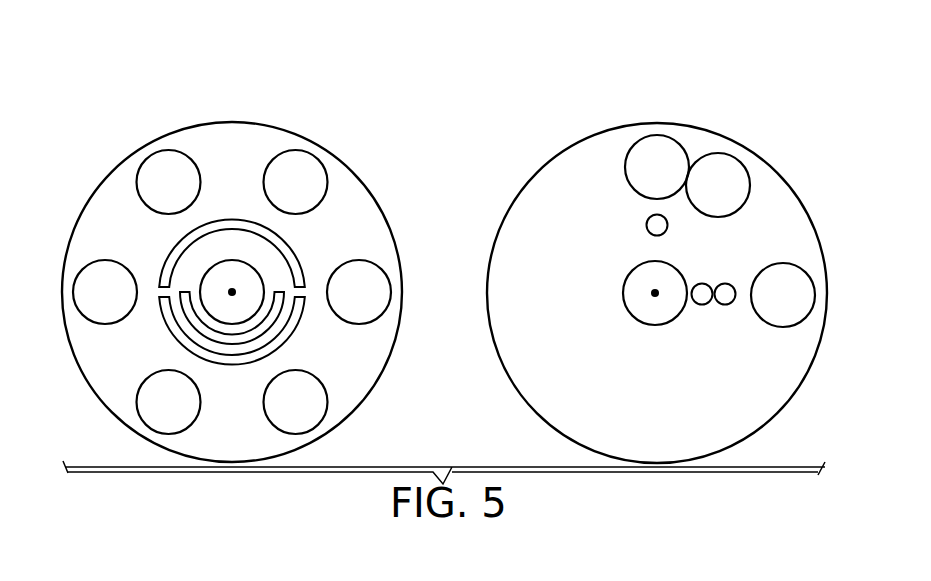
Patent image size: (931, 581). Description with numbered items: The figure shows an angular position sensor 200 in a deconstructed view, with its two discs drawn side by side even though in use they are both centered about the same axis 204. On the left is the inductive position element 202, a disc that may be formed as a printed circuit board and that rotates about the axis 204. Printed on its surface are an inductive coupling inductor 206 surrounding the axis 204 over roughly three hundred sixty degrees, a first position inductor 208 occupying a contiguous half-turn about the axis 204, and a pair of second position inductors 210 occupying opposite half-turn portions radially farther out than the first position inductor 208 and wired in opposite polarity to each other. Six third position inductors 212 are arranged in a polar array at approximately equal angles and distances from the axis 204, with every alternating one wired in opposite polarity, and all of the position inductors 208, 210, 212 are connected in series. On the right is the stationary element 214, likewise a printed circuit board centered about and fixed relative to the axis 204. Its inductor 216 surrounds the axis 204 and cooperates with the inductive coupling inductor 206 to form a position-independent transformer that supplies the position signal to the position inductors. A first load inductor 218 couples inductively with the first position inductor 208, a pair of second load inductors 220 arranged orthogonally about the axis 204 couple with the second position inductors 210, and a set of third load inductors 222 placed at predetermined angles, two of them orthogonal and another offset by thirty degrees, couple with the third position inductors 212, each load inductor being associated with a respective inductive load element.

The angular position sensor 200 is at (134, 66).
The inductive position element 202 is at (233, 122).
The axis 204 is at (232, 282).
The inductive coupling inductor 206 is at (262, 277).
The first position inductor 208 is at (282, 318).
The second position inductors 210 is at (168, 251).
The third position inductors 212 is at (190, 191).
The stationary element 214 is at (656, 123).
The inductor 216 is at (657, 325).
The first load inductor 218 is at (702, 305).
The second load inductors 220 is at (646, 223).
The third load inductors 222 is at (678, 176).